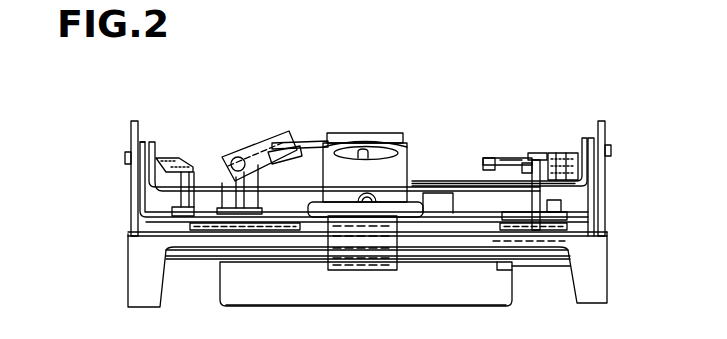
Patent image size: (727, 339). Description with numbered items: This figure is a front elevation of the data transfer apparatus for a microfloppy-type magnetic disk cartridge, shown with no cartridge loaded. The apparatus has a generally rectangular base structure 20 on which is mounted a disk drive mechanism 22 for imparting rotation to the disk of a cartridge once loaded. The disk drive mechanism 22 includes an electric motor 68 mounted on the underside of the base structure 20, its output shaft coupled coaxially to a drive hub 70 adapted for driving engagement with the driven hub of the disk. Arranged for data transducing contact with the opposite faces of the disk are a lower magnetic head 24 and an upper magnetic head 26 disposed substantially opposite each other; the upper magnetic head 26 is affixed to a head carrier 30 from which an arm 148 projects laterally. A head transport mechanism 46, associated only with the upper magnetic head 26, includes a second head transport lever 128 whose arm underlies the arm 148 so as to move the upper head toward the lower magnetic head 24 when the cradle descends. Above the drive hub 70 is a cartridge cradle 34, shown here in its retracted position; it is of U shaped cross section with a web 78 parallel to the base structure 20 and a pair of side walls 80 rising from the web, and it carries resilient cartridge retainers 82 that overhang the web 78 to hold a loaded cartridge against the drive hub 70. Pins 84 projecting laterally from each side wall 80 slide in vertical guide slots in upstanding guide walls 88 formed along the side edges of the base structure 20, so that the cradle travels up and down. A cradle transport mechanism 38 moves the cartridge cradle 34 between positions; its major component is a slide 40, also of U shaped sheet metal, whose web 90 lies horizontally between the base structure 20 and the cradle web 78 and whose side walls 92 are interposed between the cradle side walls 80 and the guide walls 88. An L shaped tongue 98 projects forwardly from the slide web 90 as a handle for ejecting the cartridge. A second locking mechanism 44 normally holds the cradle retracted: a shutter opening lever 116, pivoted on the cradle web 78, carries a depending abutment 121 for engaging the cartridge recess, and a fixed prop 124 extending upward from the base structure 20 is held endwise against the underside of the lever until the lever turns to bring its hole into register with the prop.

The base structure 20 is at (140, 270).
The disk drive mechanism 22 is at (220, 288).
The first or lower magnetic head 24 is at (370, 194).
The second or upper magnetic head 26 is at (363, 147).
The head carrier 30 is at (404, 137).
The cartridge cradle 34 is at (458, 180).
The cradle transport mechanism 38 is at (603, 210).
The slide 40 is at (140, 211).
The second locking mechanism 44 is at (534, 150).
The head transport mechanism 46 is at (245, 136).
The electric motor 68 is at (318, 300).
The drive hub 70 is at (417, 209).
The web 78 is at (210, 186).
The side walls 80 is at (152, 142).
The cartridge retainers 82 is at (176, 158).
The pins 84 is at (126, 157).
The guide walls 88 is at (131, 127).
The web 90 is at (463, 223).
The side walls 92 is at (142, 190).
The L shaped tongue 98 is at (400, 268).
The shutter opening lever 116 is at (514, 155).
The abutment 121 is at (490, 158).
The prop or strut 124 is at (532, 199).
The second head transport lever 128 is at (266, 150).
The arm 148 is at (305, 141).